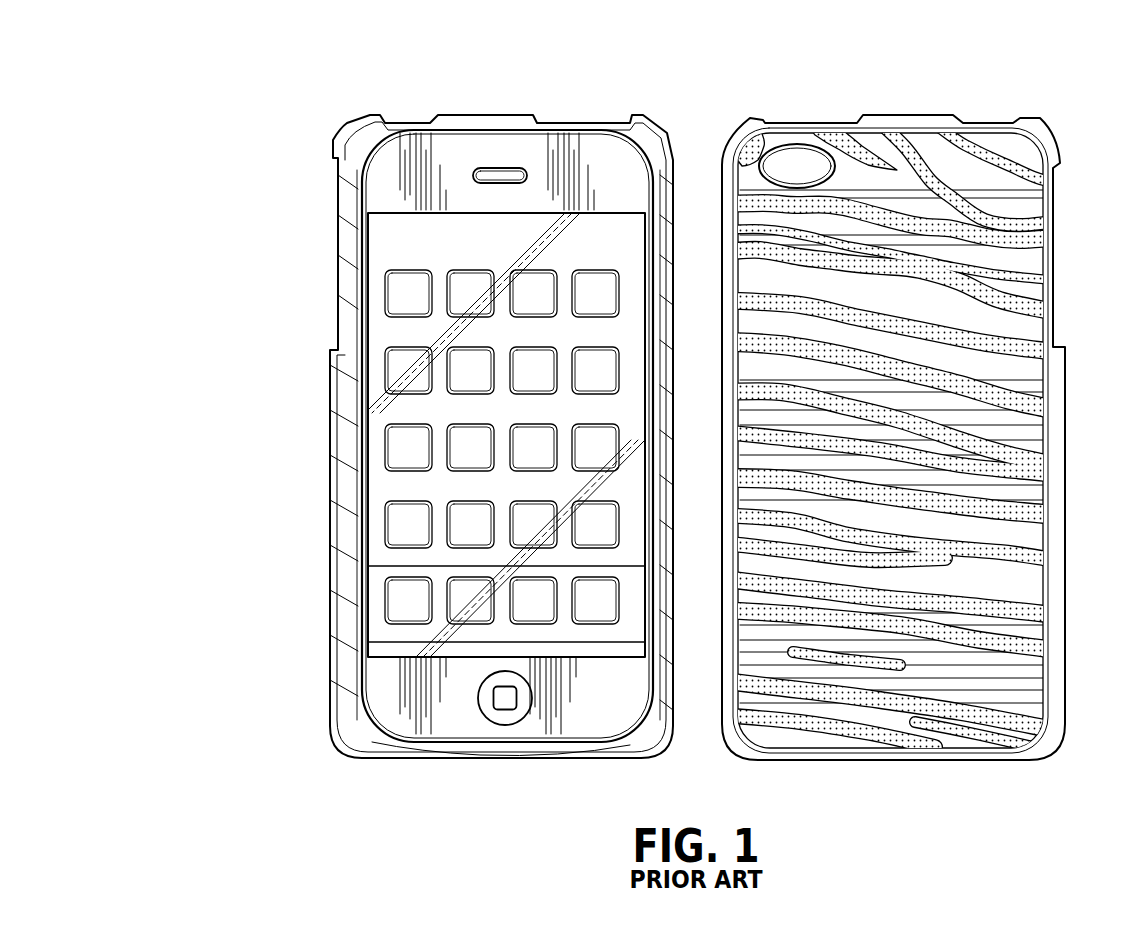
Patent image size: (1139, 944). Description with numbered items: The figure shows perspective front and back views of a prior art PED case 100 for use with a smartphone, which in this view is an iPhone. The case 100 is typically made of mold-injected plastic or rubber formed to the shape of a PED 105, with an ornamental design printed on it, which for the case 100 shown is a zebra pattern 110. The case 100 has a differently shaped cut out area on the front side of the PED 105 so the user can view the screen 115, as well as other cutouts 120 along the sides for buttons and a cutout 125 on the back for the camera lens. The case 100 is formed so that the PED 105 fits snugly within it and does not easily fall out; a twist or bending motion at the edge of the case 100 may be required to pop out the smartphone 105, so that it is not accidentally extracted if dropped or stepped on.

The PED case 100 is at (259, 413).
The PED 105 is at (572, 155).
The zebra pattern 110 is at (1000, 325).
The screen 115 is at (565, 622).
The cutouts 120 is at (1055, 198).
The cutout 125 is at (795, 170).